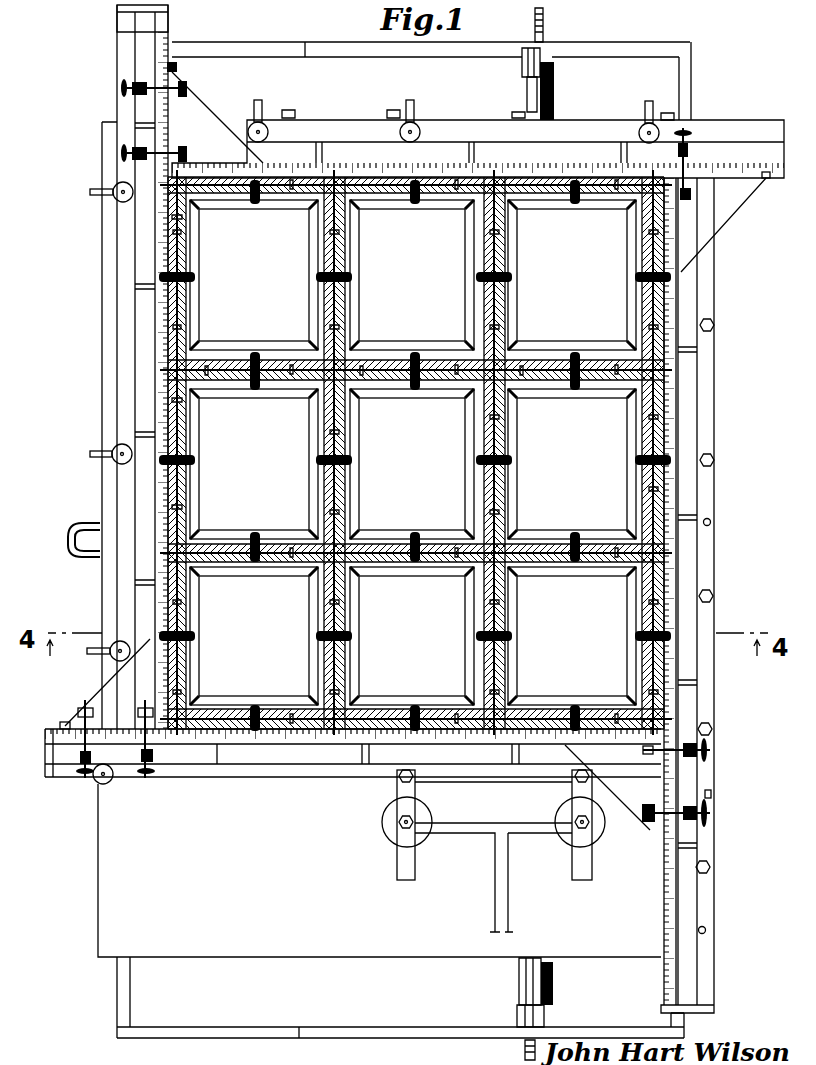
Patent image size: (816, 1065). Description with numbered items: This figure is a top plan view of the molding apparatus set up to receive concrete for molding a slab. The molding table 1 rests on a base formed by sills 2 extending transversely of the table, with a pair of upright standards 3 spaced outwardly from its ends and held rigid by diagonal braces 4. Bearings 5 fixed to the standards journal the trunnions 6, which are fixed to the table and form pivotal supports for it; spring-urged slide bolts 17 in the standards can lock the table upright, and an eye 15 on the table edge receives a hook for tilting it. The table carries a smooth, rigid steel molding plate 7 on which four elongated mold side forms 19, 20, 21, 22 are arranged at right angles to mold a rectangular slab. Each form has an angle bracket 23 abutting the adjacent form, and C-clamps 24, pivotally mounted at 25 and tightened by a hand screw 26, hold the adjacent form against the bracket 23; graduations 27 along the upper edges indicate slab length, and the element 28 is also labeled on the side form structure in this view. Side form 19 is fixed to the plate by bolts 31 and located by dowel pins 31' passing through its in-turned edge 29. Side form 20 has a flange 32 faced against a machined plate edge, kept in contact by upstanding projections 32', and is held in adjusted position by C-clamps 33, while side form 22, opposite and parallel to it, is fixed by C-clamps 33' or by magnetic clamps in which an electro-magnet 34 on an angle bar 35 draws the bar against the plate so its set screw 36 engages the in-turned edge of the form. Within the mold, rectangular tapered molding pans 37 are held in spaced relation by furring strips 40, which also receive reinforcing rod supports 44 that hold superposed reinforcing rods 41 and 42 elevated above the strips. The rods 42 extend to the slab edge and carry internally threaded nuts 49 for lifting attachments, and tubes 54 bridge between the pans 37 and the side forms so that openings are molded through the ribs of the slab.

The molding table 1 is at (100, 294).
The sills 2 is at (672, 47).
The upright standards 3 is at (556, 52).
The diagonal braces 4 is at (463, 55).
The bearings 5 is at (556, 76).
The trunnions 6 is at (527, 101).
The molding plate 7 is at (108, 838).
The eye 15 is at (68, 543).
The slide bolts 17 is at (543, 30).
The mold side form 19 is at (719, 285).
The mold side form 20 is at (415, 410).
The mold side form 21 is at (117, 362).
The mold side form 22 is at (290, 770).
The angle bracket 23 is at (172, 62).
The C-clamps 24 is at (148, 88).
The pivot 25 is at (192, 135).
The hand screw 26 is at (120, 155).
The graduations 27 is at (165, 240).
The post member 28 is at (155, 218).
The in-turned edge 29 is at (122, 386).
The bolts 31 is at (724, 603).
The dowel pins 31' is at (726, 726).
The flange 32 is at (489, 138).
The upstanding projections 32' is at (506, 93).
The C-clamps 33 is at (357, 366).
The C-clamps 33' is at (82, 787).
The electro-magnet 34 is at (428, 810).
The angle bar 35 is at (415, 872).
The set screw 36 is at (385, 814).
The molding pans 37 is at (233, 253).
The furring strips 40 is at (190, 345).
The reinforcing rods 41 is at (330, 432).
The reinforcing rods 42 is at (440, 365).
The reinforcing rod supports 44 is at (330, 215).
The internally threaded nuts 49 is at (183, 216).
The tubes 54 is at (578, 350).